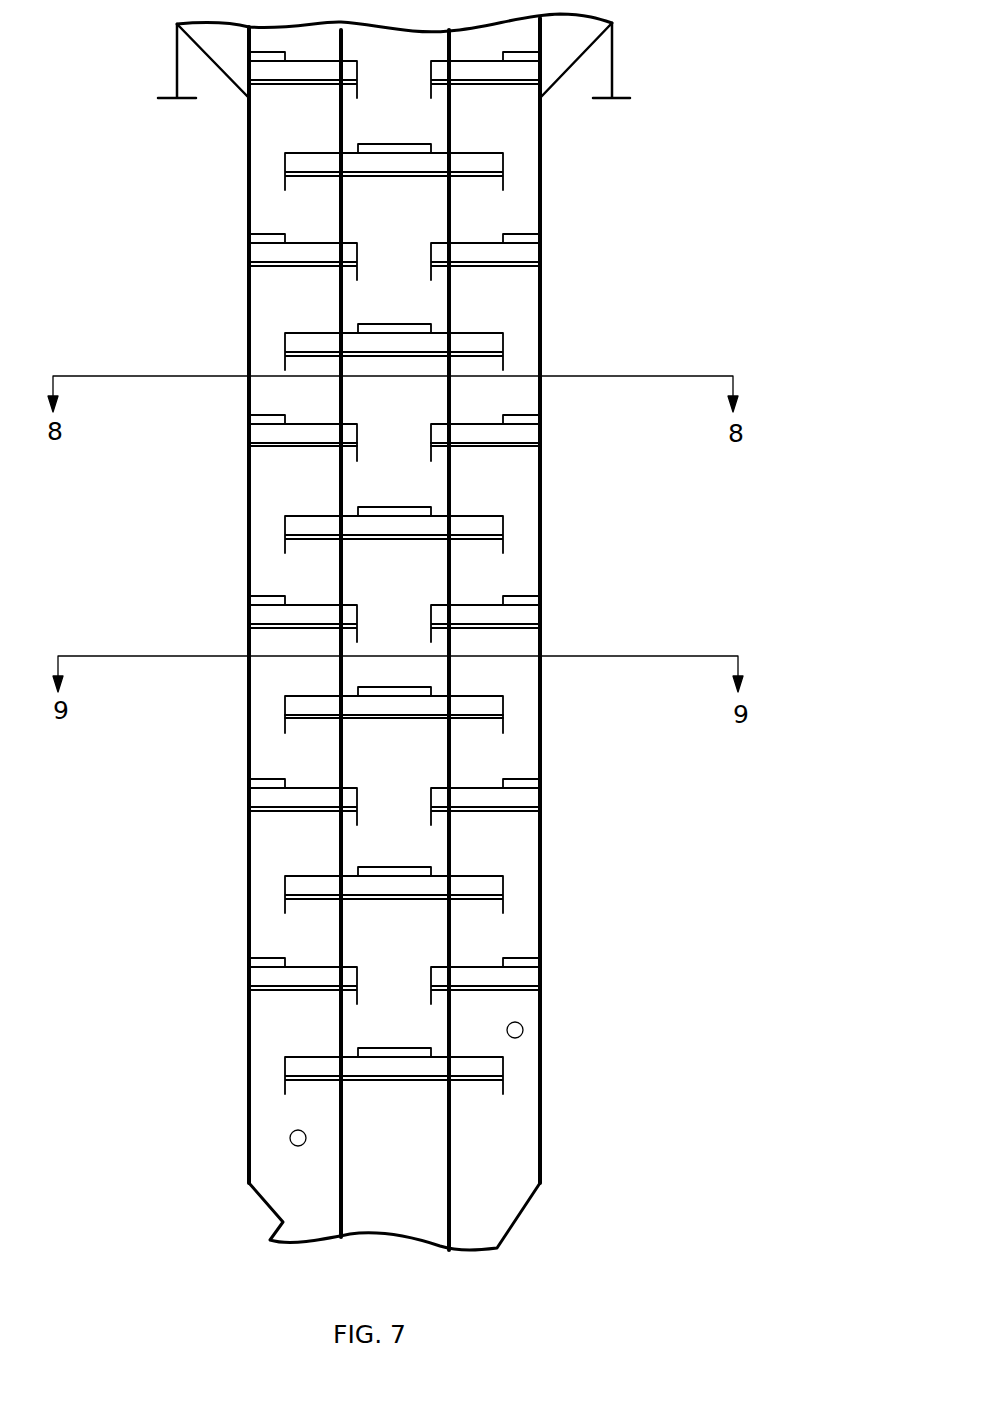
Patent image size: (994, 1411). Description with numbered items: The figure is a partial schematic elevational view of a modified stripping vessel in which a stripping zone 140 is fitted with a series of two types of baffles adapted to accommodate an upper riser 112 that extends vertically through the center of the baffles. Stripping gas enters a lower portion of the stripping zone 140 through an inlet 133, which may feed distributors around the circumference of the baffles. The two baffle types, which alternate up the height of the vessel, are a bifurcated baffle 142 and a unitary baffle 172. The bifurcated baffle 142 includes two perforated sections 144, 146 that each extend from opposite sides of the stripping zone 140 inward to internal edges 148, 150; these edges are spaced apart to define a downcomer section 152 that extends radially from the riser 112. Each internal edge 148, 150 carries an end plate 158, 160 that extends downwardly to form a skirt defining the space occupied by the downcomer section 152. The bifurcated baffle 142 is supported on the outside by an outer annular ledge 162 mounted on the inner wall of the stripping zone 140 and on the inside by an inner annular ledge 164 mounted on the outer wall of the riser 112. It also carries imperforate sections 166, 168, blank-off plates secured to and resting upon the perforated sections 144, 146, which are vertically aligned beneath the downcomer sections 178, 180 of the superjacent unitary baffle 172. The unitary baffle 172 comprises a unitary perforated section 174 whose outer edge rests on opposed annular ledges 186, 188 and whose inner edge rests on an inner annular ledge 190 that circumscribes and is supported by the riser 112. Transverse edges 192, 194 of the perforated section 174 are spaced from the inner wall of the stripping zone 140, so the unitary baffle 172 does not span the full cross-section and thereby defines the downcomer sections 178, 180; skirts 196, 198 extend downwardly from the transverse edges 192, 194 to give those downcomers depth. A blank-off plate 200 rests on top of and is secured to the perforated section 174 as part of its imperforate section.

The upper riser 112 is at (427, 1195).
The inlet 133 is at (523, 1030).
The stripping zone 140 is at (770, 565).
The bifurcated baffle 142 is at (493, 446).
The perforated section 144 is at (517, 432).
The perforated section 146 is at (303, 437).
The internal edge 148 is at (530, 438).
The internal edge 150 is at (263, 429).
The downcomer section 152 is at (396, 448).
The end plate 158 is at (358, 453).
The end plate 160 is at (435, 457).
The outer annular ledge 162 is at (265, 446).
The inner annular ledge 164 is at (475, 447).
The imperforate section 166 is at (520, 418).
The imperforate section 168 is at (266, 420).
The unitary baffle 172 is at (497, 717).
The unitary perforated section 174 is at (472, 692).
The downcomer section 178 is at (527, 715).
The downcomer section 180 is at (268, 718).
The annular ledge 186 is at (484, 721).
The annular ledge 188 is at (297, 717).
The inner annular ledge 190 is at (355, 717).
The transverse edge 192 is at (505, 706).
The transverse edge 194 is at (287, 705).
The skirt 196 is at (505, 722).
The skirt 198 is at (287, 723).
The blank-off plate 200 is at (408, 690).